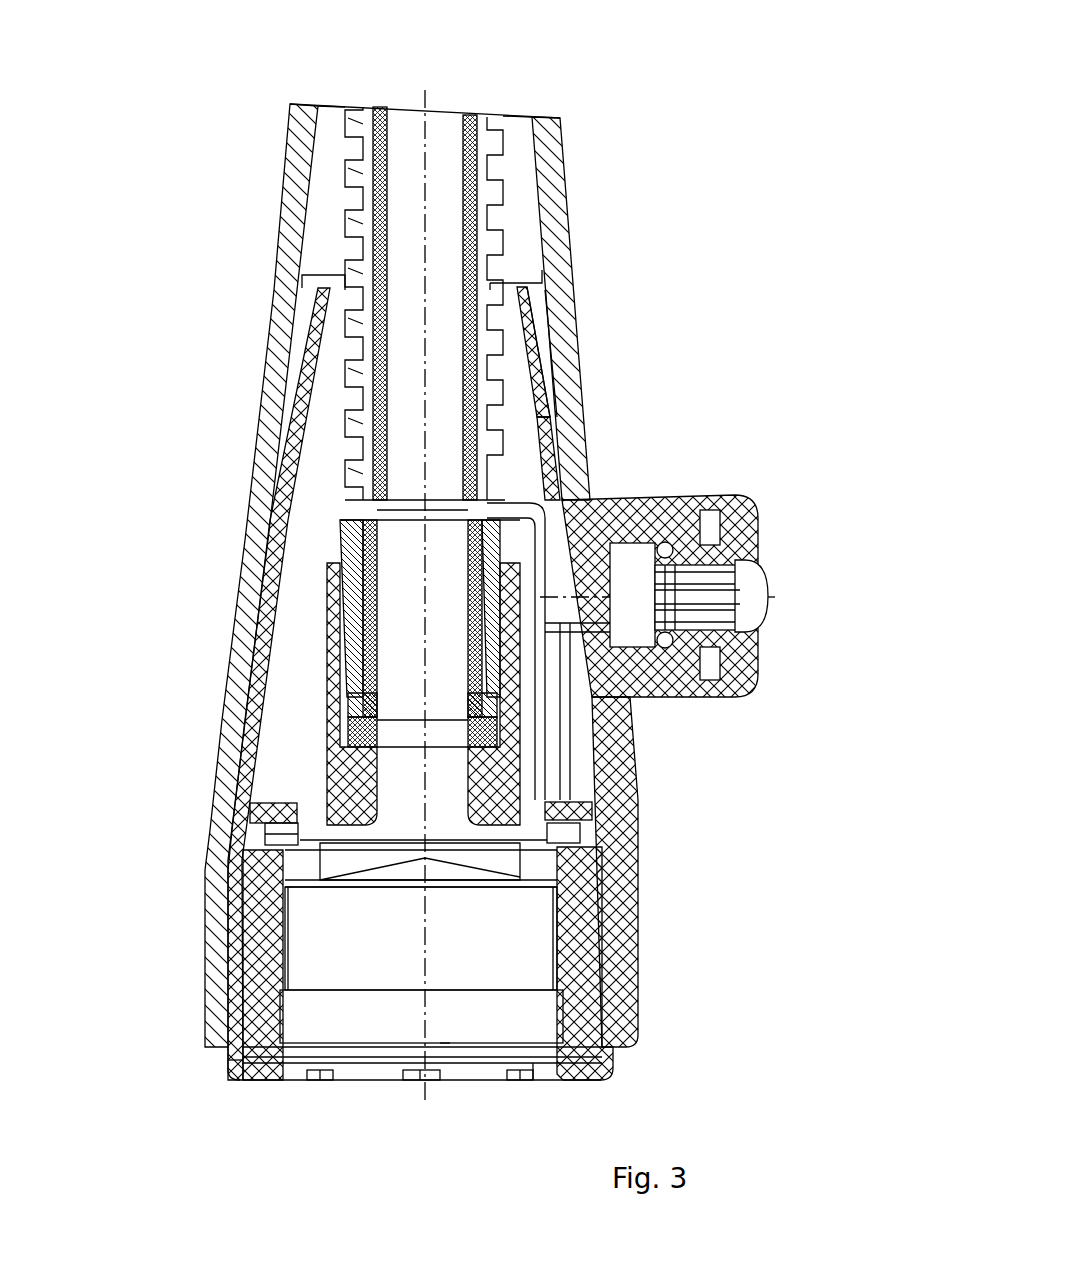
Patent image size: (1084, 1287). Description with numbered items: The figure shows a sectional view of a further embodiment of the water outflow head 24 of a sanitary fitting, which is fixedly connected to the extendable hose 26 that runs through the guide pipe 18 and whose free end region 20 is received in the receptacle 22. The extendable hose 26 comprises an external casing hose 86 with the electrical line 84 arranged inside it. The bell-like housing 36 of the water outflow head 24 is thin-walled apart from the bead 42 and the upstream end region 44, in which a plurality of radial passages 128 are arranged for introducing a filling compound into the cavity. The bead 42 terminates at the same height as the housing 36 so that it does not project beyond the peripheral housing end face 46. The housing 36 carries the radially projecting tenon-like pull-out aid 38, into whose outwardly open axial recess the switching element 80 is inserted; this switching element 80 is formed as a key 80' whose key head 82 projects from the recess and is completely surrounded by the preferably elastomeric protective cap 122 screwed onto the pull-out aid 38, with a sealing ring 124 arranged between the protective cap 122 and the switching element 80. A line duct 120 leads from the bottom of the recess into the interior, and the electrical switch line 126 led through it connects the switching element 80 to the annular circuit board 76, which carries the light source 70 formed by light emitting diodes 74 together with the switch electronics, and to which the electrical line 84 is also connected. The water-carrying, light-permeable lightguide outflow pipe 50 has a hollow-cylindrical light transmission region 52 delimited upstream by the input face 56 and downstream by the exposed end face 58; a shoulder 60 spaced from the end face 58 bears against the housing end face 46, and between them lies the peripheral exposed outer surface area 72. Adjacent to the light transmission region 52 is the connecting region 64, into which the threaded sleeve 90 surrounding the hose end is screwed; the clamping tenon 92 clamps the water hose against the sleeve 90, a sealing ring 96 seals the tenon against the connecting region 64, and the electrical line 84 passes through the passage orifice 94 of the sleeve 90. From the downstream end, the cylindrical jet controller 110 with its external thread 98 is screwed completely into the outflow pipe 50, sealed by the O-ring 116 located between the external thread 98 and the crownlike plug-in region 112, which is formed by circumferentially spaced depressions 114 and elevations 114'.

The guide pipe 18 is at (570, 217).
The free end region 20 is at (570, 217).
The receptacle 22 is at (533, 290).
The water outflow head 24 is at (540, 380).
The extendable hose 26 is at (376, 100).
The housing 36 is at (592, 486).
The pull-out aid 38 is at (708, 486).
The bead 42 is at (605, 770).
The end region 44 is at (300, 440).
The housing end face 46 is at (270, 1040).
The lightguide outflow pipe 50 is at (594, 867).
The light transmission region 52 is at (587, 918).
The input face 56 is at (285, 858).
The end face 58 is at (300, 1086).
The shoulder 60 is at (262, 1080).
The connecting region 64 is at (350, 775).
The light source 70 is at (282, 835).
The light emitting diodes 74 is at (282, 835).
The exposed outer surface area 72 is at (265, 1062).
The annular circuit board 76 is at (290, 797).
The switching element 80 is at (824, 596).
The key 80' is at (738, 598).
The key head 82 is at (725, 580).
The electrical line 84 is at (478, 120).
The casing hose 86 is at (362, 103).
The sleeve 90 is at (345, 545).
The clamping tenon 92 is at (330, 660).
The passage orifice 94 is at (512, 490).
The sealing ring 96 is at (315, 690).
The external thread 98 is at (555, 1050).
The jet controller 110 is at (462, 1014).
The plug-in region 112 is at (536, 1086).
The depressions 114 is at (420, 1108).
The elevations 114' is at (406, 1102).
The O-ring 116 is at (560, 1063).
The line duct 120 is at (658, 680).
The protective cap 122 is at (735, 520).
The sealing ring 124 is at (715, 648).
The electrical switch line 126 is at (600, 782).
The radial passages 128 is at (322, 345).